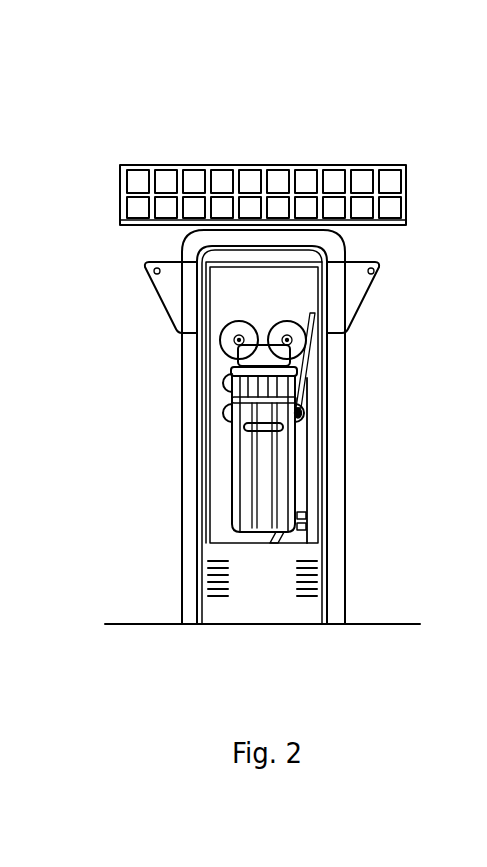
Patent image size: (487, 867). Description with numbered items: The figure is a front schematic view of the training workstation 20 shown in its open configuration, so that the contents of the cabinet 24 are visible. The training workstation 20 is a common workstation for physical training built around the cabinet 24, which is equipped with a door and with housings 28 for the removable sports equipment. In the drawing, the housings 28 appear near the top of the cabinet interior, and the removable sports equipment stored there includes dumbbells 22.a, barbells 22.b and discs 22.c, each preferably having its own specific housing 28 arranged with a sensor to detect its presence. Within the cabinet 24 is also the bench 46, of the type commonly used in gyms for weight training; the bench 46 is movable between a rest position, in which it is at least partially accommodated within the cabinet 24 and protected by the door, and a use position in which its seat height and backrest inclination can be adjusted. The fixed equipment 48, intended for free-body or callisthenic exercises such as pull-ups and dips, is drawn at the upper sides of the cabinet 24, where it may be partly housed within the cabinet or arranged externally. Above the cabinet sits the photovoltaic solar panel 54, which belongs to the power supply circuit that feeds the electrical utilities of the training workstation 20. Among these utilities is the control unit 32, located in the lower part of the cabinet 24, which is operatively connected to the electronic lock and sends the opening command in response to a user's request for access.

The training workstation 20 is at (108, 115).
The photovoltaic solar panel 54 is at (300, 180).
The cabinet 24 is at (200, 488).
The fixed equipment 48 is at (153, 276).
The housings 28 is at (236, 340).
The discs 22.c is at (231, 350).
The barbells 22.b is at (308, 368).
The bench 46 is at (283, 447).
The dumbbells 22.a is at (308, 522).
The control unit 32 is at (222, 579).